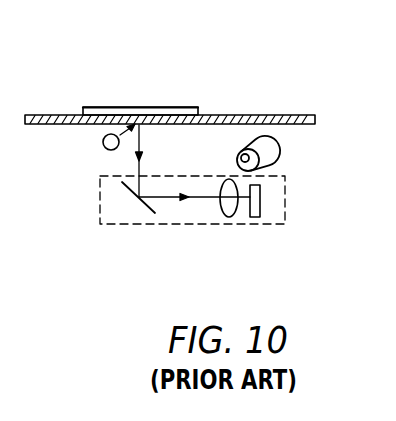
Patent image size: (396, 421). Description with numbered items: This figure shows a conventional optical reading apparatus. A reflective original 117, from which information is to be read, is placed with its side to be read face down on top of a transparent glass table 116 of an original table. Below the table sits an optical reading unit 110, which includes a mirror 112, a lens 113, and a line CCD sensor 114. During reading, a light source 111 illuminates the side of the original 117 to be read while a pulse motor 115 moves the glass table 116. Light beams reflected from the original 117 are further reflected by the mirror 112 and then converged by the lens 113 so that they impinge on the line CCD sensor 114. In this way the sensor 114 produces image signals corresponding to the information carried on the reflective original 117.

The optical reading unit 110 is at (267, 225).
The light source 111 is at (104, 148).
The mirror 112 is at (128, 192).
The lens 113 is at (227, 216).
The line CCD sensor 114 is at (260, 208).
The pulse motor 115 is at (280, 153).
The transparent glass table 116 is at (285, 116).
The reflective original 117 is at (125, 107).